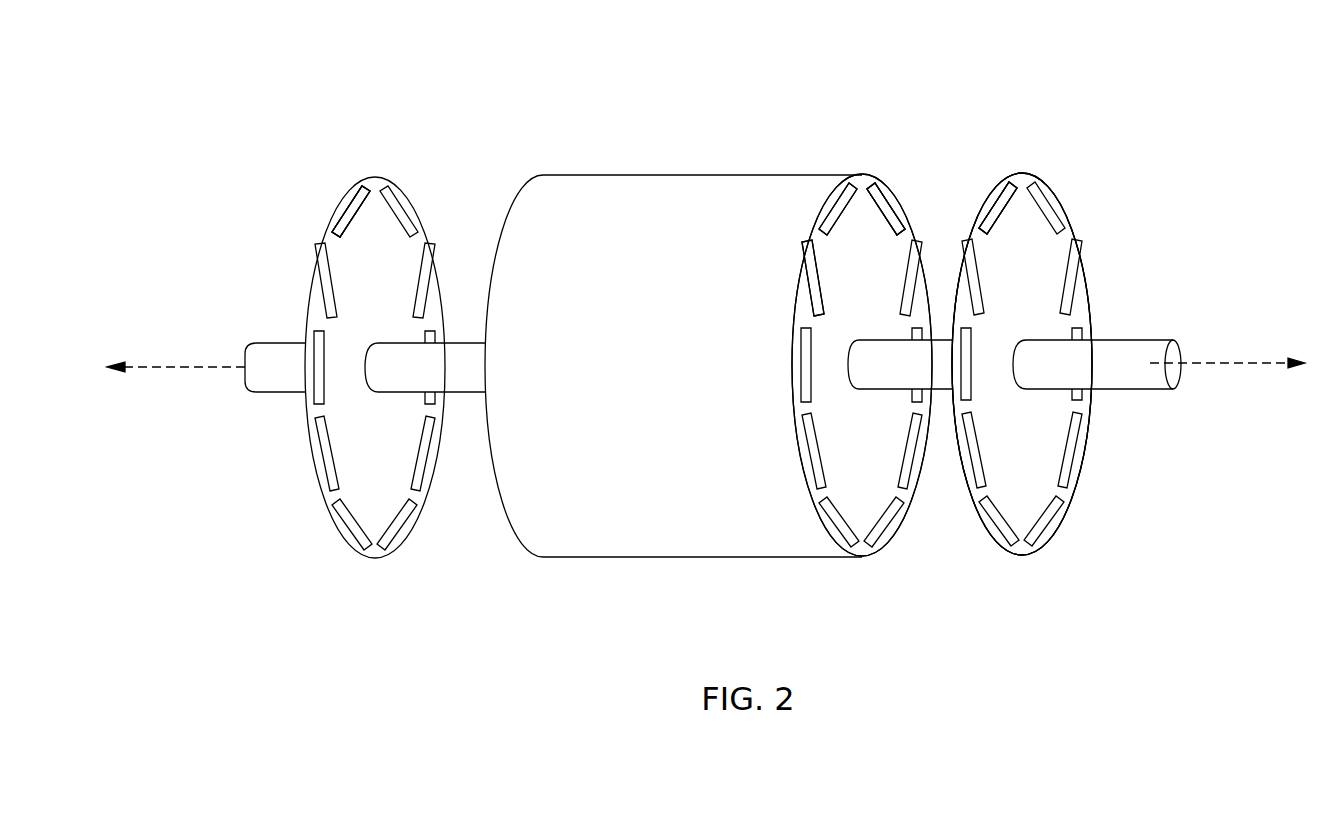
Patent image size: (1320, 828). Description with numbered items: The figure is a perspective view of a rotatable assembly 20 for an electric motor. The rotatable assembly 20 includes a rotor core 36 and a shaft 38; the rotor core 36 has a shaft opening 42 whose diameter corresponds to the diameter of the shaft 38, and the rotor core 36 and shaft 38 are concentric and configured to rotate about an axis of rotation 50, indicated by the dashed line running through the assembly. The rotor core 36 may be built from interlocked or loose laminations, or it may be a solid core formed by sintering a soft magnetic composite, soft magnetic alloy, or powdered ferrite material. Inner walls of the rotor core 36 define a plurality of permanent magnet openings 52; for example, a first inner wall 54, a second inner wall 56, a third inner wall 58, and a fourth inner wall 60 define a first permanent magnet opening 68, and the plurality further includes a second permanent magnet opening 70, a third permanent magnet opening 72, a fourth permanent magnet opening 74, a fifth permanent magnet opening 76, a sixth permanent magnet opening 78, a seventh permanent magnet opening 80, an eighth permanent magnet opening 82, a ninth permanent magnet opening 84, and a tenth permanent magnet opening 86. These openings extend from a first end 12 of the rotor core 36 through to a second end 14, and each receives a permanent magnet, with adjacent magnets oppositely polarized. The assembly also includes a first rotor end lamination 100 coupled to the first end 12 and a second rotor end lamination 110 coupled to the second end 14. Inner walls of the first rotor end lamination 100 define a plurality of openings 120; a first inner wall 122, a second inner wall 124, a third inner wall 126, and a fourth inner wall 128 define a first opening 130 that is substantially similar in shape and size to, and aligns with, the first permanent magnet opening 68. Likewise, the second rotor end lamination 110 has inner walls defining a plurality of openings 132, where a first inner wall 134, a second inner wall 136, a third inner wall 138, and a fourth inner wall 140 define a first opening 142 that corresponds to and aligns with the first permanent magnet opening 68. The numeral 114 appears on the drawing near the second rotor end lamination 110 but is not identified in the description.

The first end 12 is at (292, 165).
The second end 14 is at (1122, 202).
The rotatable assembly 20 is at (960, 104).
The rotor core 36 is at (628, 174).
The shaft 38 is at (1133, 391).
The shaft opening 42 is at (849, 392).
The axis of rotation 50 is at (1231, 370).
The plurality of permanent magnet openings 52 is at (910, 203).
The first inner wall 54 is at (834, 180).
The second inner wall 56 is at (852, 186).
The third inner wall 58 is at (871, 176).
The fourth inner wall 60 is at (817, 236).
The first permanent magnet opening 68 is at (822, 212).
The second permanent magnet opening 70 is at (893, 207).
The third permanent magnet opening 72 is at (912, 274).
The fourth permanent magnet opening 74 is at (920, 337).
The fifth permanent magnet opening 76 is at (910, 476).
The sixth permanent magnet opening 78 is at (883, 534).
The seventh permanent magnet opening 80 is at (830, 534).
The eighth permanent magnet opening 82 is at (801, 450).
The ninth permanent magnet opening 84 is at (788, 367).
The tenth permanent magnet opening 86 is at (803, 278).
The first rotor end lamination 100 is at (340, 536).
The second rotor end lamination 110 is at (1063, 527).
The rotor ring 114 is at (1085, 167).
The plurality of openings 120 is at (435, 197).
The first inner wall 122 is at (351, 204).
The second inner wall 124 is at (366, 183).
The third inner wall 126 is at (358, 215).
The fourth inner wall 128 is at (331, 243).
The first opening 130 is at (342, 214).
The plurality of openings 132 is at (1105, 297).
The first inner wall 134 is at (990, 203).
The second inner wall 136 is at (1029, 172).
The third inner wall 138 is at (1000, 218).
The fourth inner wall 140 is at (972, 237).
The first opening 142 is at (1006, 182).